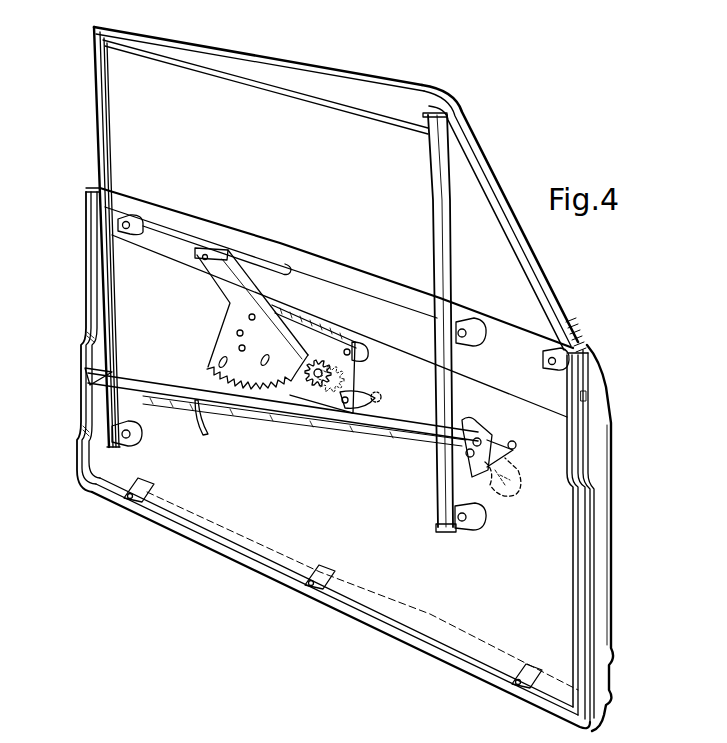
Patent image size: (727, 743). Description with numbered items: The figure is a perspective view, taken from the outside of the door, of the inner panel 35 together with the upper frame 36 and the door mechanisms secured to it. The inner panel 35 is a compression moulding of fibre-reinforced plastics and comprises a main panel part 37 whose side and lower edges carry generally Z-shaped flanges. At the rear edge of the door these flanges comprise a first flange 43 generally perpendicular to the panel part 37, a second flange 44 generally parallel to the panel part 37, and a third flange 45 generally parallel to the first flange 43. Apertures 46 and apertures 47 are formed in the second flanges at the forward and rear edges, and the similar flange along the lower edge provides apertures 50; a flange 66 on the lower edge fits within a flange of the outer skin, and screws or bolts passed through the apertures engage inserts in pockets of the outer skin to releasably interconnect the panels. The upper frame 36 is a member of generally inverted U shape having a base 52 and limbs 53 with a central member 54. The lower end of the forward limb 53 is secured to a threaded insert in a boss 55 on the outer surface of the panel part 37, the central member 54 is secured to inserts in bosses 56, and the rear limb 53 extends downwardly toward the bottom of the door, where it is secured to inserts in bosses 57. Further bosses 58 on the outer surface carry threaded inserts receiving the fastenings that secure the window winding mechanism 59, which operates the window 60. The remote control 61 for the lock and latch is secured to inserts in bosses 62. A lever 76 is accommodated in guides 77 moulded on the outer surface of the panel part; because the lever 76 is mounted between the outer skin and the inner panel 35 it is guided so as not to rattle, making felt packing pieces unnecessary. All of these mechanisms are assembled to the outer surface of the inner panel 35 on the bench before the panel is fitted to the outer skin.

The inner panel 35 is at (353, 457).
The upper frame 36 is at (342, 237).
The main panel part 37 is at (336, 329).
The first flange 43 is at (603, 463).
The second flange 44 is at (90, 190).
The third flange 45 is at (582, 548).
The apertures 46 is at (89, 277).
The apertures 47 is at (90, 232).
The apertures 50 is at (130, 500).
The base 52 is at (340, 80).
The limbs 53 is at (100, 134).
The central member 54 is at (453, 253).
The boss 55 is at (581, 343).
The bosses 56 is at (484, 322).
The bosses 57 is at (138, 236).
The bosses 58 is at (354, 398).
The window winding mechanism 59 is at (218, 332).
The window 60 is at (396, 135).
The remote control 61 is at (478, 432).
The bosses 62 is at (511, 498).
The flange 66 is at (207, 549).
The lever 76 is at (260, 408).
The guides 77 is at (206, 431).